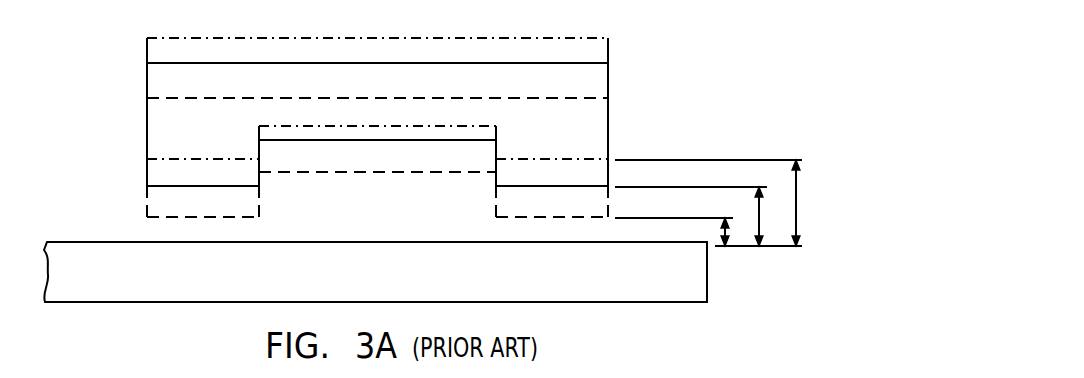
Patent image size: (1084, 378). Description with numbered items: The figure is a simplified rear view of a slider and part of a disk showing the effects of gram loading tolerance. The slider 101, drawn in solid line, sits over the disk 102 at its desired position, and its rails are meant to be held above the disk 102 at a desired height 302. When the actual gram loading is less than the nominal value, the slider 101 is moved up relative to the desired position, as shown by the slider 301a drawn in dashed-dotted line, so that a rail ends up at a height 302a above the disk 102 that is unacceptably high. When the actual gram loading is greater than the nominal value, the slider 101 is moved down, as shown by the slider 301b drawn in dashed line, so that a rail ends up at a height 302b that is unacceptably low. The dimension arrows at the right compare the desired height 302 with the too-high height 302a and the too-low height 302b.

The slider 101 is at (327, 122).
The disk 102 is at (102, 241).
The slider 301a is at (147, 50).
The slider 301b is at (147, 193).
The desired height 302 is at (762, 216).
The height 302a is at (797, 194).
The height 302b is at (727, 234).